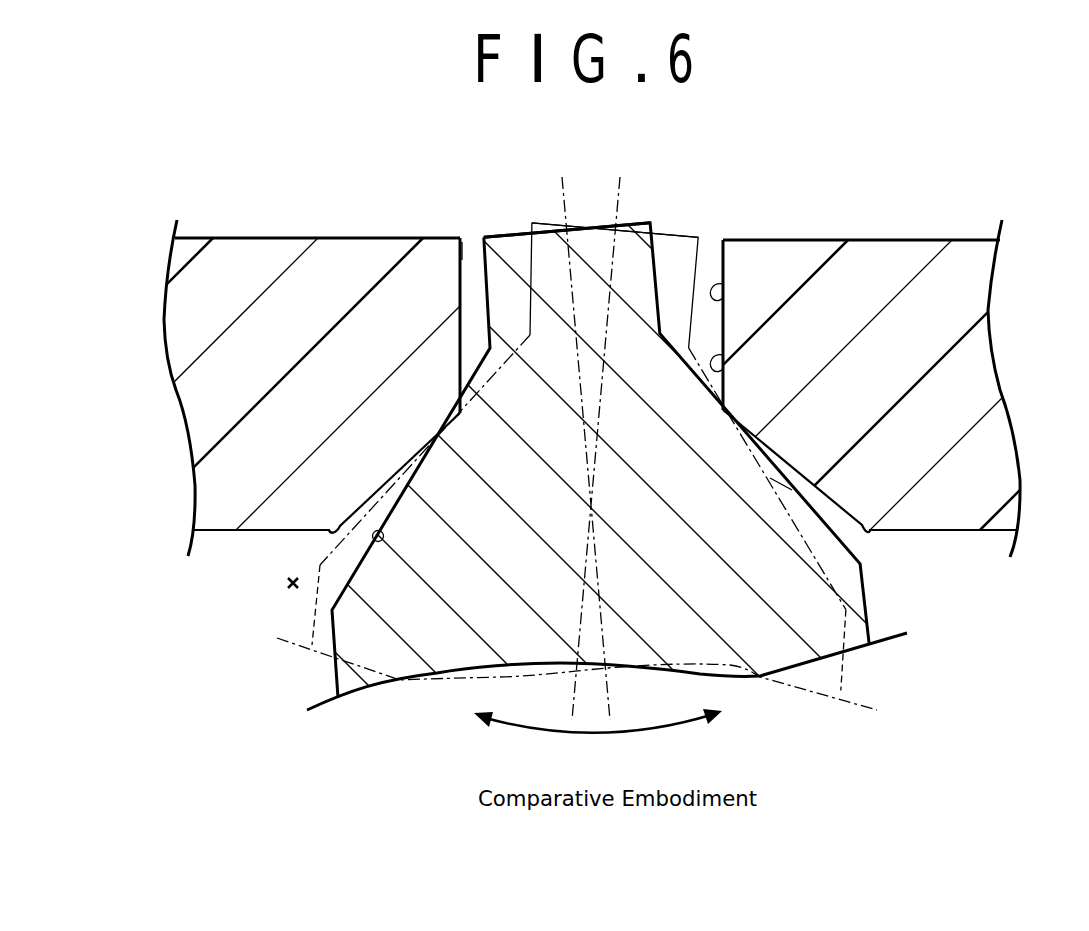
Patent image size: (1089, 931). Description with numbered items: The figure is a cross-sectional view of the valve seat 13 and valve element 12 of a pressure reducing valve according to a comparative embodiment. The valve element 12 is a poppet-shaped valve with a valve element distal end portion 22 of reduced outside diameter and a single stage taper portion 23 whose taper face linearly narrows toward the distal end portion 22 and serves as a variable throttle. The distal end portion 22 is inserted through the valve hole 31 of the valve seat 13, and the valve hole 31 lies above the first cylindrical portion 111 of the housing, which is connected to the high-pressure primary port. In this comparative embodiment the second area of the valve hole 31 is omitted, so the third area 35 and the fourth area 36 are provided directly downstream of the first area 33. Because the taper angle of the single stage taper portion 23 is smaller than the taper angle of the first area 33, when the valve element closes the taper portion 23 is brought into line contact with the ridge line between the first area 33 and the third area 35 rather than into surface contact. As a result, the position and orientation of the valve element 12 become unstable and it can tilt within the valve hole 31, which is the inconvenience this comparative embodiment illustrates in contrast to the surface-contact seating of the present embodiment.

The valve element 12 is at (337, 687).
The valve seat 13 is at (373, 250).
The valve element distal end portion 22 is at (498, 234).
The single stage taper portion 23 is at (383, 540).
The valve hole 31 is at (462, 245).
The first area 33 is at (333, 527).
The third area 35 is at (725, 361).
The fourth area 36 is at (462, 242).
The first cylindrical portion 111 is at (284, 587).